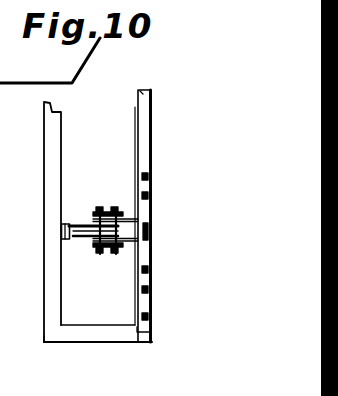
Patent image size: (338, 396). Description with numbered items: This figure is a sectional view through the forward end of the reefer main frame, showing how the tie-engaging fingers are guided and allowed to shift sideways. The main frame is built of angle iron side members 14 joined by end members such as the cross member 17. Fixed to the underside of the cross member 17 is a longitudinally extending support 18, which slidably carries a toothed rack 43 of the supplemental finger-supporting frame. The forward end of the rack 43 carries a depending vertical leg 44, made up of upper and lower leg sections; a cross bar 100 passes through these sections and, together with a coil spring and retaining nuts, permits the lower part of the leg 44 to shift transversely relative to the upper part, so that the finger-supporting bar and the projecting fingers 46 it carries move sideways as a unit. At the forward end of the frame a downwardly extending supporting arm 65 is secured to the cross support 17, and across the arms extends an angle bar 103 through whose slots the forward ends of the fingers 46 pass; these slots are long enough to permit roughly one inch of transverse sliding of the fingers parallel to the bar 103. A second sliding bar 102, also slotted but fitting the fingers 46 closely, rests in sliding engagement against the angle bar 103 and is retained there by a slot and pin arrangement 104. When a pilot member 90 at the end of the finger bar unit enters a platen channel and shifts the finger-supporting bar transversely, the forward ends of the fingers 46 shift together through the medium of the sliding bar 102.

The angle iron side member 14 is at (50, 344).
The end member 17 is at (44, 166).
The longitudinally extending support 18 is at (69, 222).
The toothed rack 43 is at (70, 240).
The depending vertical leg 44 is at (105, 206).
The tie-engaging finger 46 is at (150, 195).
The supporting arm 65 is at (105, 343).
The pilot member 90 is at (150, 316).
The cross bar 100 is at (117, 255).
The sliding bar 102 is at (147, 97).
The angle bar 103 is at (143, 113).
The slot and pin arrangement 104 is at (150, 231).